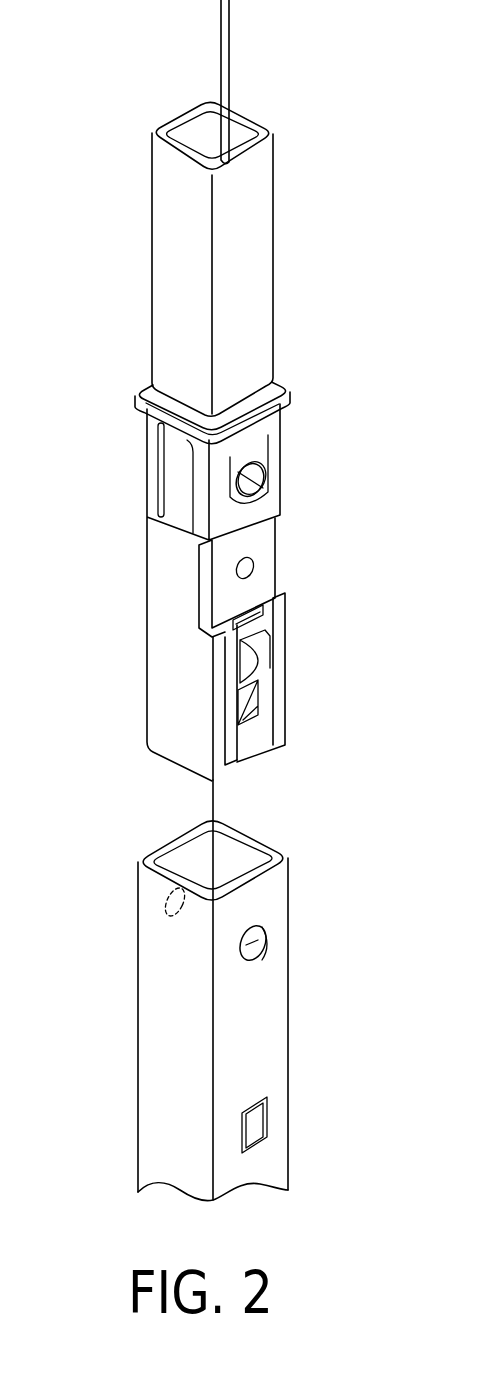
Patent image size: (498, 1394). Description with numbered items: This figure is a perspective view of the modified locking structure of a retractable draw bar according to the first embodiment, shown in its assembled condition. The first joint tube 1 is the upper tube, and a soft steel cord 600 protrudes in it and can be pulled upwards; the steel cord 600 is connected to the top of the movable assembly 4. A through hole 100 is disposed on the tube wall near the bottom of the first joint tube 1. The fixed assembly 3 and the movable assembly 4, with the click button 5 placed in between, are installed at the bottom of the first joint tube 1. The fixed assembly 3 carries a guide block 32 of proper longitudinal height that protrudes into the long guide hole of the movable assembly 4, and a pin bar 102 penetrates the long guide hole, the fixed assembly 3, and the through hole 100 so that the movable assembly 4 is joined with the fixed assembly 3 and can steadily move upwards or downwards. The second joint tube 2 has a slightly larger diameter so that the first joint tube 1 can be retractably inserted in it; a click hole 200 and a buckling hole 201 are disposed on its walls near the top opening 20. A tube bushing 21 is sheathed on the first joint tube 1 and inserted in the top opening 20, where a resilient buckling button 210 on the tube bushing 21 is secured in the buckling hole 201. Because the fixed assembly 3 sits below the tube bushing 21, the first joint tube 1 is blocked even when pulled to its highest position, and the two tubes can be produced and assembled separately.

The first joint tube 1 is at (168, 258).
The second joint tube 2 is at (153, 1007).
The fixed assembly 3 is at (158, 615).
The movable assembly 4 is at (257, 723).
The click button 5 is at (262, 663).
The top opening 20 is at (252, 853).
The tube bushing 21 is at (279, 379).
The guide block 32 is at (252, 616).
The through hole 100 is at (246, 550).
The pin bar 102 is at (252, 570).
The click hole 200 is at (255, 1123).
The buckling hole 201 is at (268, 943).
The resilient buckling button 210 is at (256, 475).
The steel cord 600 is at (231, 63).